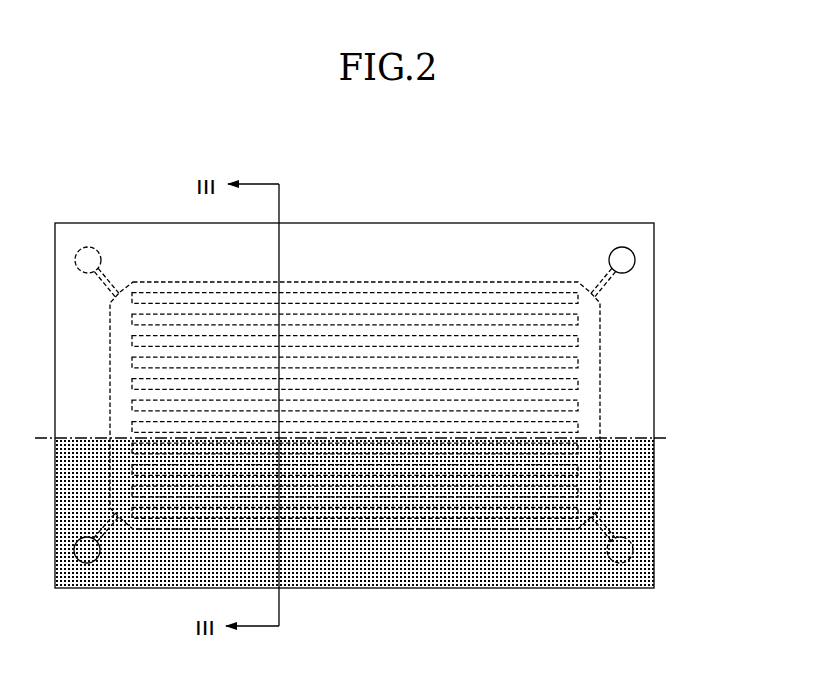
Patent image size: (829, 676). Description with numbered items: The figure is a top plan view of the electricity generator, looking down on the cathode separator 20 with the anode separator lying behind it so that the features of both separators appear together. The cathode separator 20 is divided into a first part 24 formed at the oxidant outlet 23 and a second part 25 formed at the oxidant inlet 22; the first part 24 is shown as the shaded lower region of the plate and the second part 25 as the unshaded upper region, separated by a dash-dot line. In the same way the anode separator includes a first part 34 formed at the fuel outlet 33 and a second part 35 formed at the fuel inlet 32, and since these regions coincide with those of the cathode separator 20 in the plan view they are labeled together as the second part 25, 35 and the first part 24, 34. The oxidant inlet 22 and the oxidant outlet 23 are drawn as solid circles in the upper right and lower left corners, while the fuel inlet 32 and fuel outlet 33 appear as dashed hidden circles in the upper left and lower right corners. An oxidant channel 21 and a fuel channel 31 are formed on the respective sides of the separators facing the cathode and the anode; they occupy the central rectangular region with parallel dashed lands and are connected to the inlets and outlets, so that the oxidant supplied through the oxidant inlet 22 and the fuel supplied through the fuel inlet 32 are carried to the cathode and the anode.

The cathode separator 20 is at (496, 214).
The oxidant channel 21 is at (414, 404).
The fuel channel 31 is at (588, 373).
The oxidant inlet 22 is at (620, 247).
The oxidant outlet 23 is at (86, 563).
The first part 24 is at (351, 547).
The first part 34 is at (345, 563).
The second part 25 is at (354, 297).
The second part 35 is at (347, 247).
The fuel inlet 32 is at (88, 247).
The fuel outlet 33 is at (620, 563).